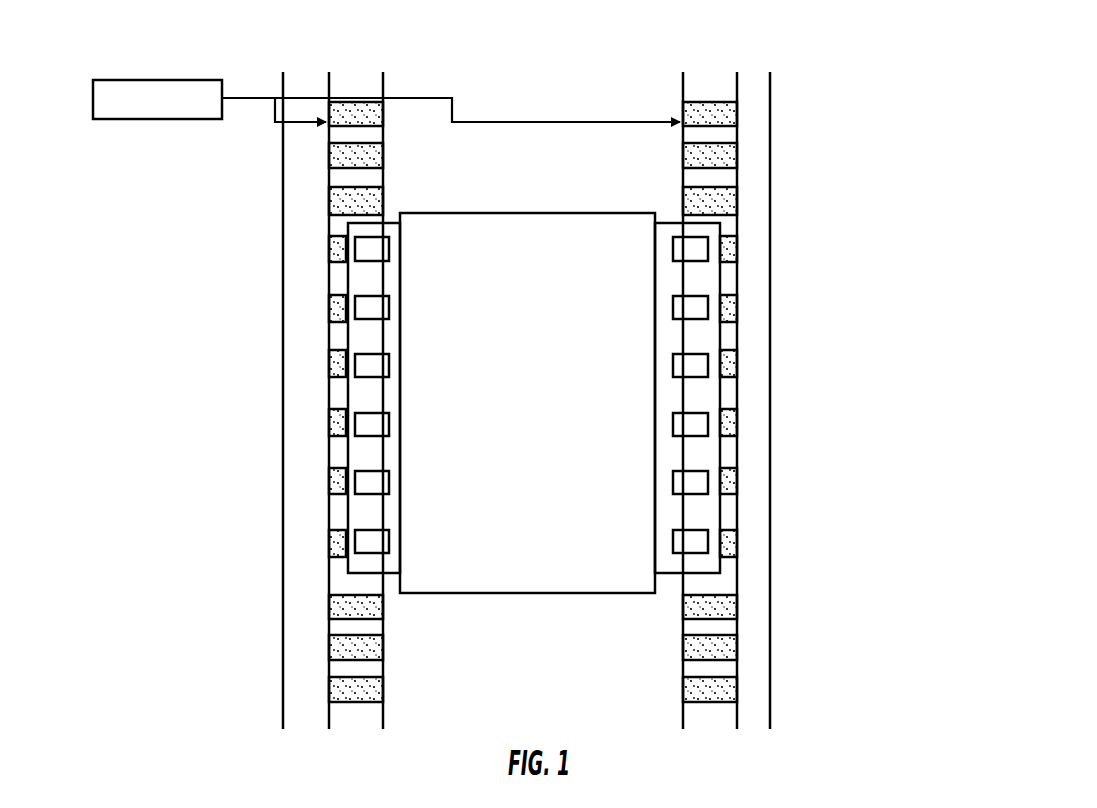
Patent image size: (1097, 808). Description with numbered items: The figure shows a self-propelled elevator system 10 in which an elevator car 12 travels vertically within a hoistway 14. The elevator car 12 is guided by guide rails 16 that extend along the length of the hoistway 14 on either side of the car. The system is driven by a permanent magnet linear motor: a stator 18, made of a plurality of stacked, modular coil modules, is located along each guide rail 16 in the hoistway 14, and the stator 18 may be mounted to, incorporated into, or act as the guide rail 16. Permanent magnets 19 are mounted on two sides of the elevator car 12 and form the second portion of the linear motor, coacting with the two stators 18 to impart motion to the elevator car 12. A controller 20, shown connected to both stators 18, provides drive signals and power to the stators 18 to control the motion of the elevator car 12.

The elevator system 10 is at (806, 127).
The elevator car 12 is at (527, 434).
The hoistway 14 is at (771, 265).
The guide rail 16 is at (384, 83).
The stator 18 is at (378, 155).
The permanent magnets 19 is at (367, 248).
The controller 20 is at (173, 119).